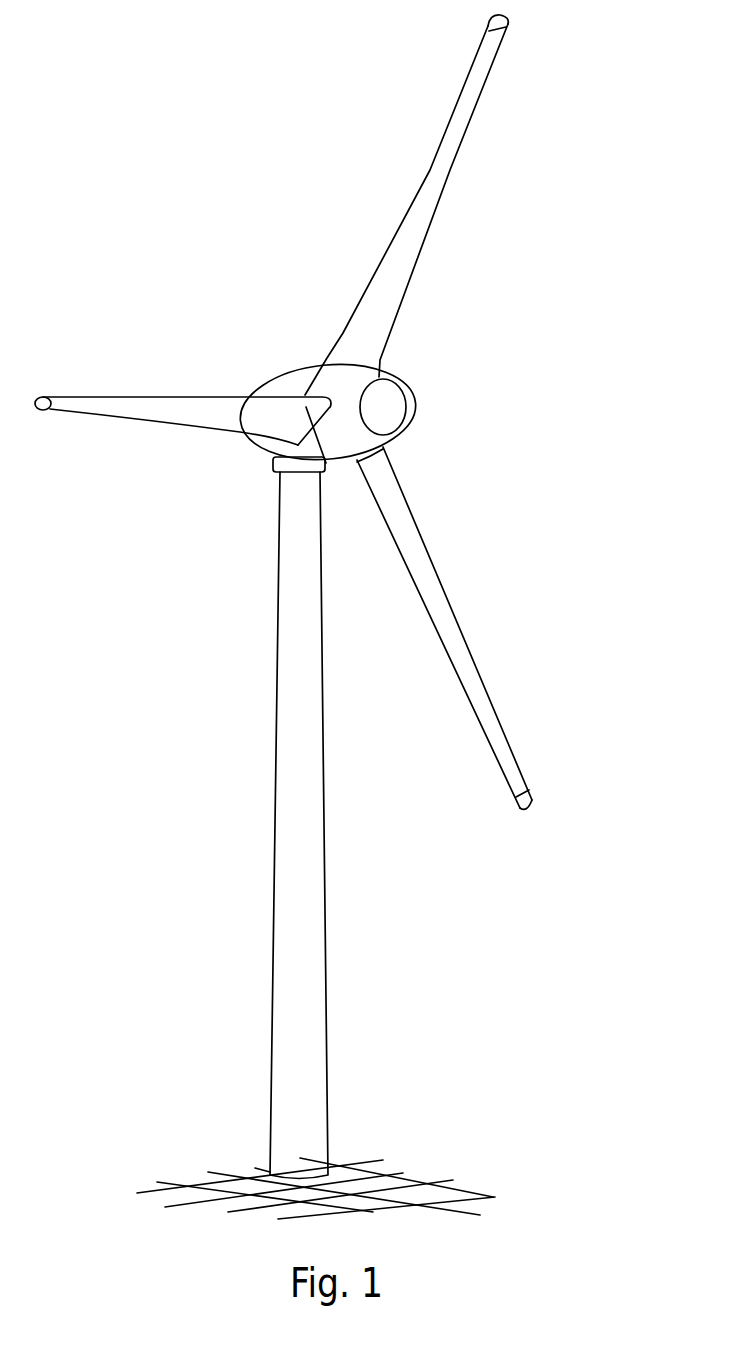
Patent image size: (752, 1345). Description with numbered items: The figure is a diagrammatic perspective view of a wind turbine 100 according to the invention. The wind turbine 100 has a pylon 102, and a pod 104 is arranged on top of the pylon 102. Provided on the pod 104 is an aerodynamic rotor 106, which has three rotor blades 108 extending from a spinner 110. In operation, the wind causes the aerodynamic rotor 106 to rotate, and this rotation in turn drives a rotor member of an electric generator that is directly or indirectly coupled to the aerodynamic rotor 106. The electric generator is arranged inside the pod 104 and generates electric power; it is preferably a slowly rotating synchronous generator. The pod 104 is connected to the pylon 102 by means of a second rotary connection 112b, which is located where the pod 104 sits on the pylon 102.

The wind turbine 100 is at (243, 572).
The pylon 102 is at (305, 932).
The pod 104 is at (292, 382).
The aerodynamic rotor 106 is at (474, 328).
The rotor blades 108 is at (447, 150).
The spinner 110 is at (387, 410).
The second rotary connection 112b is at (269, 466).